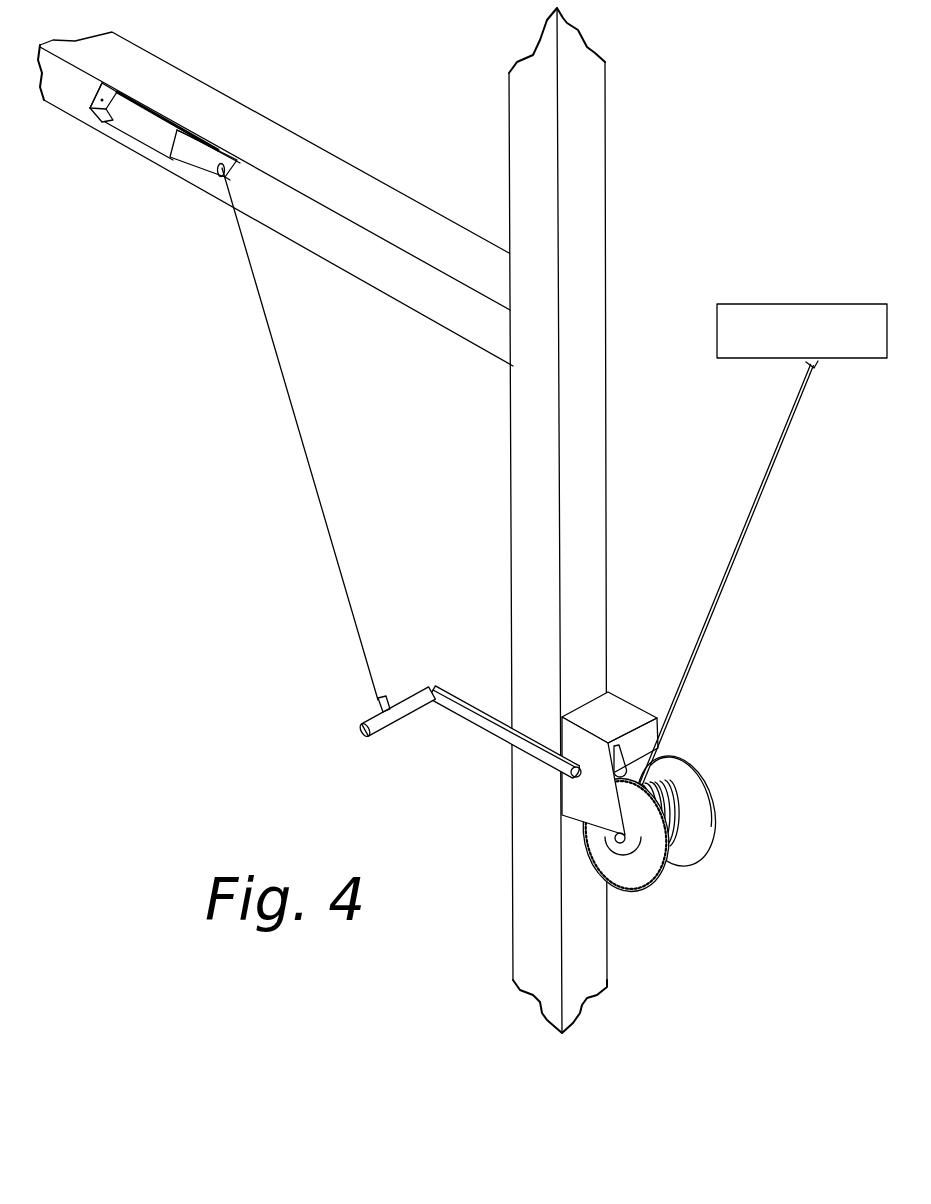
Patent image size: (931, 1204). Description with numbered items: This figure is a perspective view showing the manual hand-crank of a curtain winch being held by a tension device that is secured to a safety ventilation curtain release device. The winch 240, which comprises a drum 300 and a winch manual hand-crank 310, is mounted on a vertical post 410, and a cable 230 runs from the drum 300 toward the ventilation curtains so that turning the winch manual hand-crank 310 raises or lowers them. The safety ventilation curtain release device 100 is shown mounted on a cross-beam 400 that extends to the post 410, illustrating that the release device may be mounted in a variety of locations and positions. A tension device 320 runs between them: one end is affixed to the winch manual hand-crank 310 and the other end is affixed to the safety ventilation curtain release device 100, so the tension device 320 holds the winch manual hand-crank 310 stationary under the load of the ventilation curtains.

The safety ventilation curtain release device 100 is at (124, 170).
The curtain cable 230 is at (752, 503).
The winch 240 is at (643, 904).
The drum 300 is at (687, 840).
The winch manual hand-crank 310 is at (483, 720).
The tension device 320 is at (303, 467).
The cross-beam 400 is at (460, 257).
The post 410 is at (533, 492).